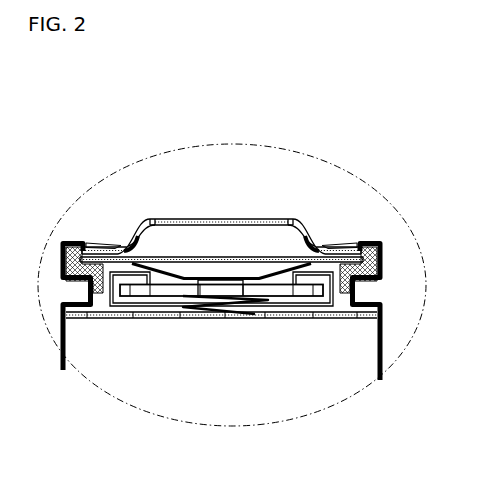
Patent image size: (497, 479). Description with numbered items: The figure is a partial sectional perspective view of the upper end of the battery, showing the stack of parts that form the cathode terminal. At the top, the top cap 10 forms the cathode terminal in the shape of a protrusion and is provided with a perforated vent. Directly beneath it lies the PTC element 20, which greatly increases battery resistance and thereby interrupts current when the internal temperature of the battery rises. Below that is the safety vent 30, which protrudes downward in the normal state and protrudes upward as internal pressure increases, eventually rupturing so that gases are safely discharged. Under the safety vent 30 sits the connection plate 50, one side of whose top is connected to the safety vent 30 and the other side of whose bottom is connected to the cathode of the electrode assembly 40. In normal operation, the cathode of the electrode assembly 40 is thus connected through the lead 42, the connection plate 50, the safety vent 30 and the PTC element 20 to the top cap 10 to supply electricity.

The top cap 10 is at (226, 218).
The positive temperature coefficient (PTC) element 20 is at (298, 219).
The safety vent 30 is at (157, 267).
The electrode assembly 40 is at (347, 363).
The lead 42 is at (220, 300).
The connection plate 50 is at (170, 289).